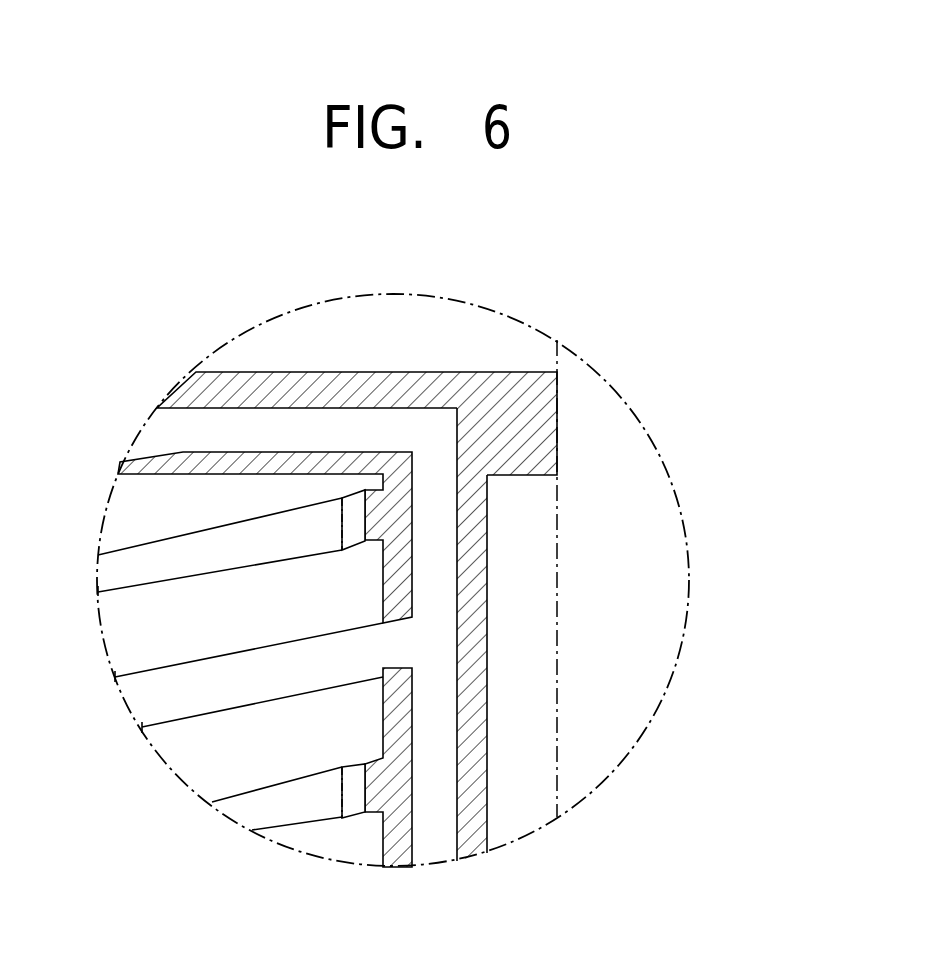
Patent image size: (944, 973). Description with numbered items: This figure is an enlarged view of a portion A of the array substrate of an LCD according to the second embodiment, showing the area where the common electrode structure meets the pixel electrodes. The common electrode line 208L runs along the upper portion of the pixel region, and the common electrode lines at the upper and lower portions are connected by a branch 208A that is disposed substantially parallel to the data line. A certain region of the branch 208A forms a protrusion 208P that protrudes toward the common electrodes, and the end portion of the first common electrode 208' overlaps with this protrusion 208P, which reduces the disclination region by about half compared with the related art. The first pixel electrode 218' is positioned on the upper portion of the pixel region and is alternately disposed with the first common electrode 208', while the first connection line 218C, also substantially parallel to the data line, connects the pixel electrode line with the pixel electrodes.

The portion A is at (140, 432).
The common electrode line 208L is at (540, 425).
The branch 208A is at (470, 613).
The first common electrode 208' is at (255, 688).
The protrusion 208P is at (355, 812).
The first pixel electrode 218' is at (229, 717).
The first connection line 218C is at (438, 703).